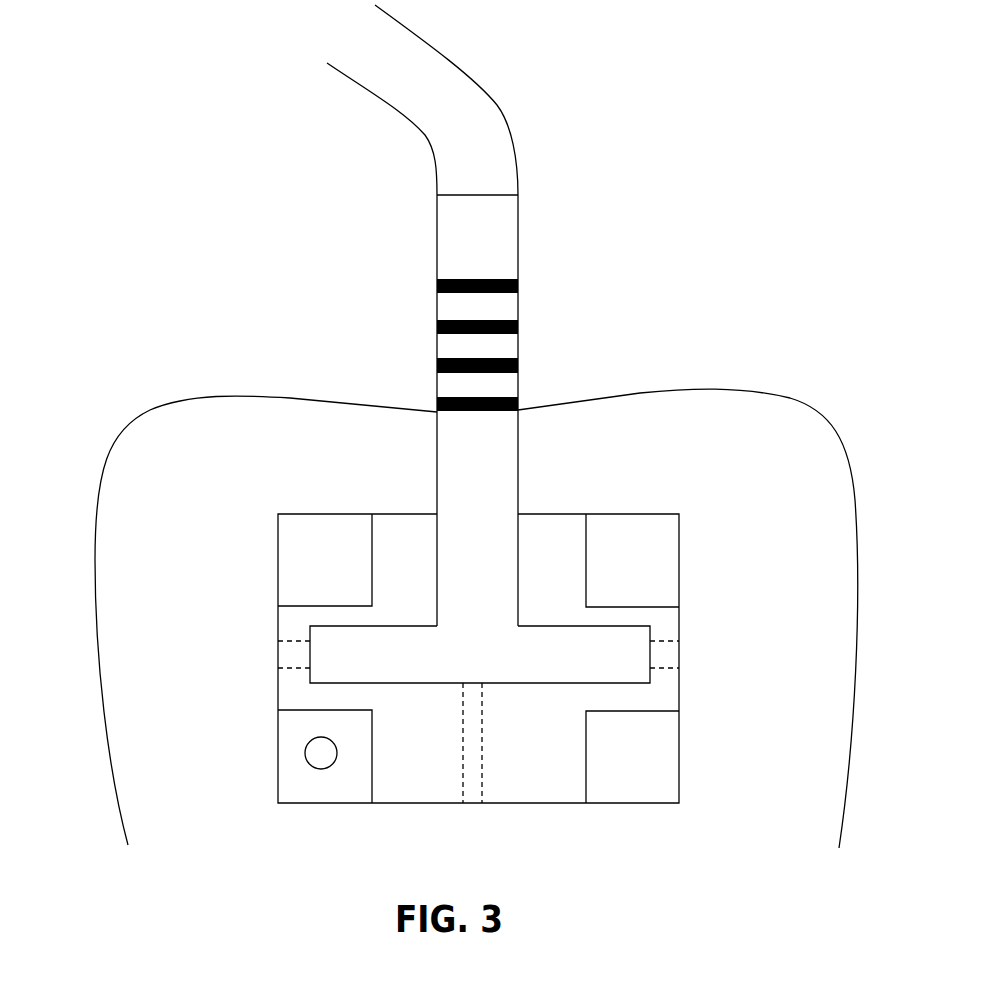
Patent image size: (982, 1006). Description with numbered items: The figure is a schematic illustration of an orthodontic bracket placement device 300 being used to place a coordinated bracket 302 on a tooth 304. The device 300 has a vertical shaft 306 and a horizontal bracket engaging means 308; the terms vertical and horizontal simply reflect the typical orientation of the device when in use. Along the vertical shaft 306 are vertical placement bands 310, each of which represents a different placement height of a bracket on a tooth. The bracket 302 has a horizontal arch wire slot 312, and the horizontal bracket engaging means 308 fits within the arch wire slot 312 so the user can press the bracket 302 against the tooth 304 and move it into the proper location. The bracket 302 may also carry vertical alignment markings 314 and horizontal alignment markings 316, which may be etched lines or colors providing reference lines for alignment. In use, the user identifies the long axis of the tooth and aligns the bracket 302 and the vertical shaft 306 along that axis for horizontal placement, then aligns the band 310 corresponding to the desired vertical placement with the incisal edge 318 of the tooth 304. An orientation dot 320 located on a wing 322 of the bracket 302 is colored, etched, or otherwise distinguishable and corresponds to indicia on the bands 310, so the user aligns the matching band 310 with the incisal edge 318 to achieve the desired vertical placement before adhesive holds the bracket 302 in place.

The orthodontic bracket placement device 300 is at (588, 182).
The coordinated bracket 302 is at (565, 545).
The tooth 304 is at (768, 460).
The vertical shaft 306 is at (463, 238).
The horizontal bracket engaging means 308 is at (567, 668).
The vertical placement bands 310 is at (518, 400).
The horizontal arch wire slot 312 is at (688, 604).
The vertical alignment markings 314 is at (473, 778).
The horizontal alignment markings 316 is at (286, 656).
The incisal edge 318 is at (291, 397).
The orientation dot 320 is at (320, 752).
The wing 322 is at (288, 792).